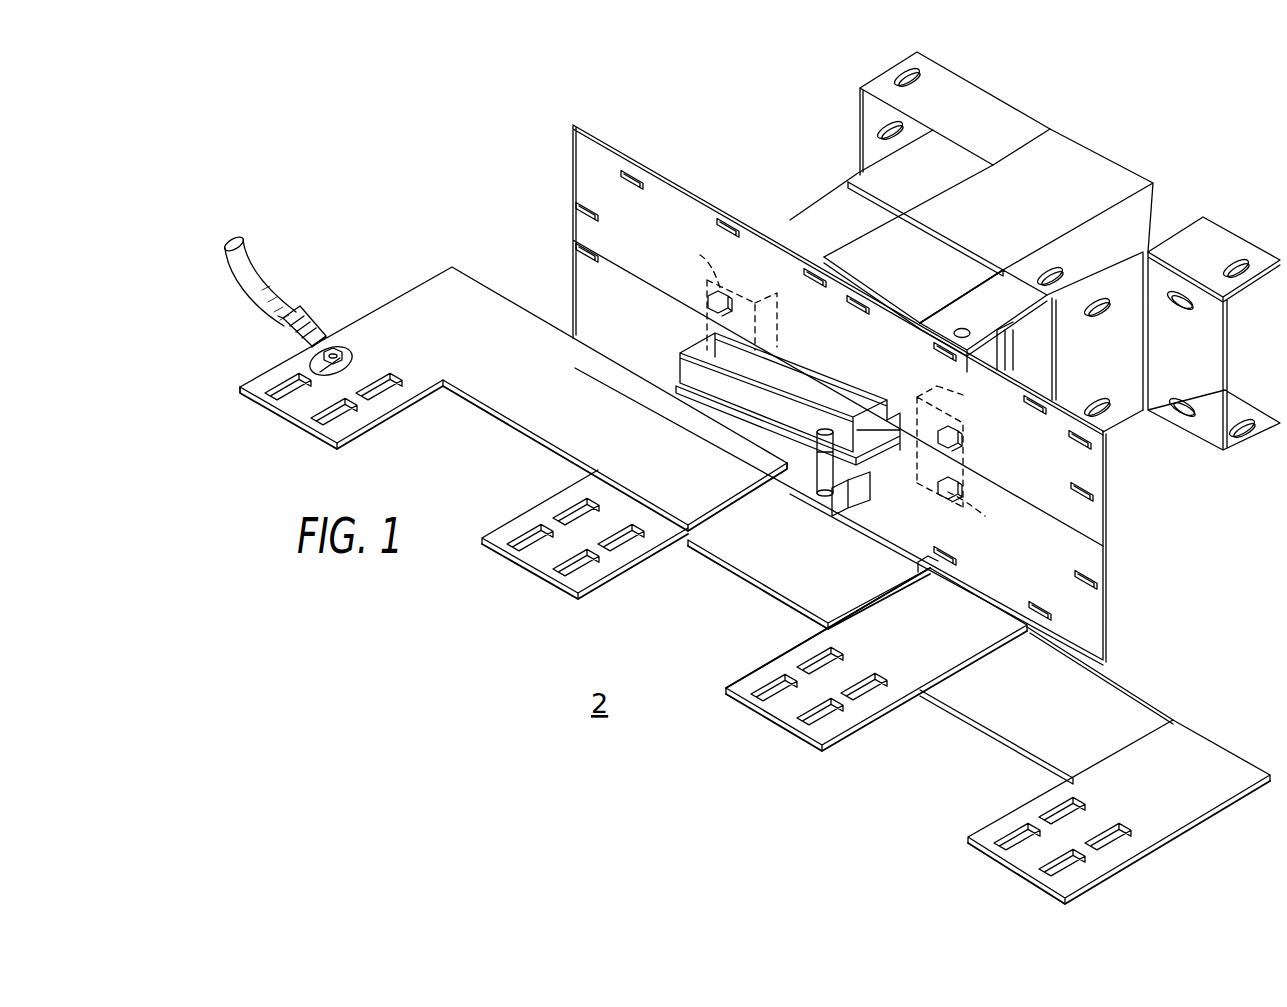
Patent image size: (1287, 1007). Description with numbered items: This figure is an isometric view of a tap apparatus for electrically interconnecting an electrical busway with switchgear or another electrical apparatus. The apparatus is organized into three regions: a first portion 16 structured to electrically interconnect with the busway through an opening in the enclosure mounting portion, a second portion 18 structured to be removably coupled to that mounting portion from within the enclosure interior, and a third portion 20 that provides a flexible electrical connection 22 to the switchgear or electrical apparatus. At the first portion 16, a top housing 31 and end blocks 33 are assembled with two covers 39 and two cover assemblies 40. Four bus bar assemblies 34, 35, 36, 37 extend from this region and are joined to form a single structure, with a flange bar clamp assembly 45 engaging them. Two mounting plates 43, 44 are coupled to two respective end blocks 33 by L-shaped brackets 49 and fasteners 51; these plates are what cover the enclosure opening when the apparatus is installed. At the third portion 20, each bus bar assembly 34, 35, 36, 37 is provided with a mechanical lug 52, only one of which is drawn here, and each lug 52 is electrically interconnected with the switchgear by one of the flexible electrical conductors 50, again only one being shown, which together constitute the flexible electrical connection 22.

The first portion 16 is at (1037, 247).
The second portion 18 is at (979, 723).
The third portion 20 is at (513, 367).
The flexible electrical connection 22 is at (258, 307).
The top housing 31 is at (988, 295).
The end block 33 is at (1042, 346).
The bus bar assembly 34 is at (291, 425).
The bus bar assembly 35 is at (535, 577).
The bus bar assembly 36 is at (773, 730).
The bus bar assembly 37 is at (1007, 869).
The cover 39 is at (1082, 166).
The cover assembly 40 is at (948, 86).
The mounting plate 43 is at (585, 174).
The mounting plate 44 is at (1088, 623).
The flange bar clamp assembly 45 is at (660, 369).
The L-shaped bracket 49 is at (841, 386).
The flexible electrical conductor 50 is at (242, 275).
The fastener 51 is at (708, 307).
The mechanical lug 52 is at (303, 323).